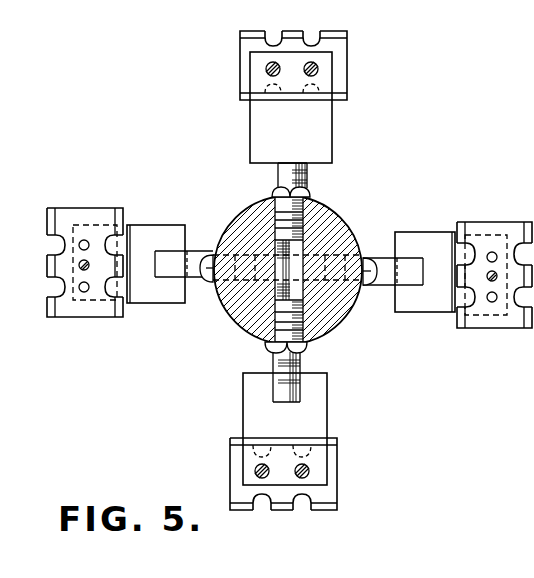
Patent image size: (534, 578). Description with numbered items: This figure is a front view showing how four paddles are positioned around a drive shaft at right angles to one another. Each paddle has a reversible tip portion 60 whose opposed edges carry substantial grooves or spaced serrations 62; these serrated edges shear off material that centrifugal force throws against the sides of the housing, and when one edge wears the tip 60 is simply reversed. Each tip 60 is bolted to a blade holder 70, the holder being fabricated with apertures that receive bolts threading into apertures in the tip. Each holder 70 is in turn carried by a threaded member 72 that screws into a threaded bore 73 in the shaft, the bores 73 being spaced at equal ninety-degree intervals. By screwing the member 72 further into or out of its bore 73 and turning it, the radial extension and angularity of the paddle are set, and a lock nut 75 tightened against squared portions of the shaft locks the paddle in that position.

The tip portion 60 is at (103, 212).
The spaced serrations 62 is at (58, 288).
The blade holder 70 is at (325, 127).
The threaded member 72 is at (305, 215).
The threaded bore 73 is at (336, 282).
The lock nut 75 is at (278, 192).